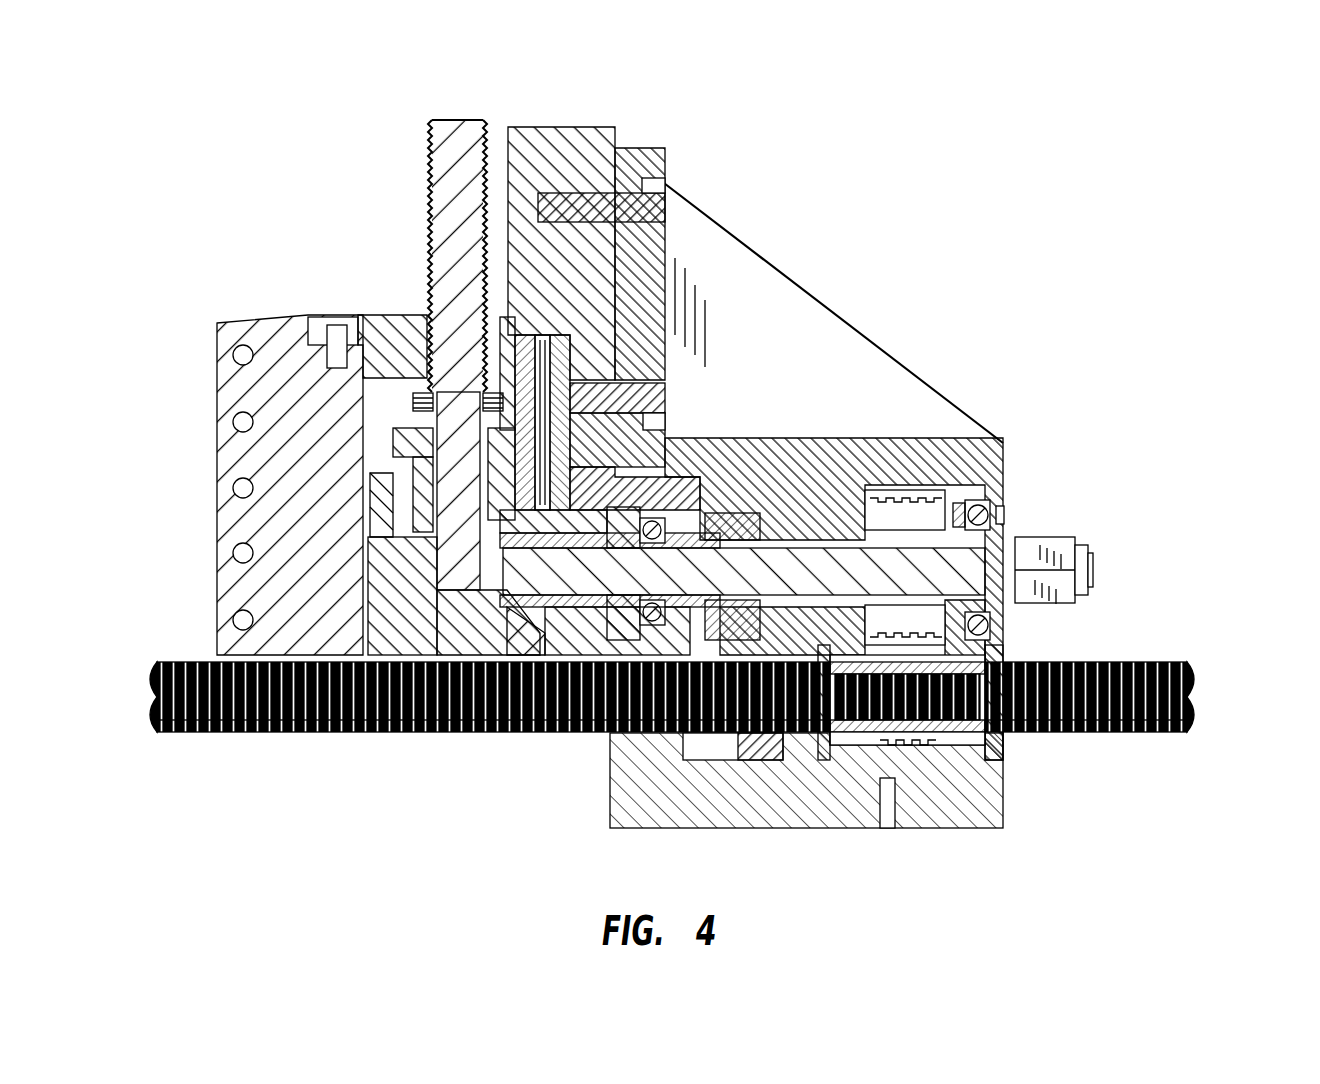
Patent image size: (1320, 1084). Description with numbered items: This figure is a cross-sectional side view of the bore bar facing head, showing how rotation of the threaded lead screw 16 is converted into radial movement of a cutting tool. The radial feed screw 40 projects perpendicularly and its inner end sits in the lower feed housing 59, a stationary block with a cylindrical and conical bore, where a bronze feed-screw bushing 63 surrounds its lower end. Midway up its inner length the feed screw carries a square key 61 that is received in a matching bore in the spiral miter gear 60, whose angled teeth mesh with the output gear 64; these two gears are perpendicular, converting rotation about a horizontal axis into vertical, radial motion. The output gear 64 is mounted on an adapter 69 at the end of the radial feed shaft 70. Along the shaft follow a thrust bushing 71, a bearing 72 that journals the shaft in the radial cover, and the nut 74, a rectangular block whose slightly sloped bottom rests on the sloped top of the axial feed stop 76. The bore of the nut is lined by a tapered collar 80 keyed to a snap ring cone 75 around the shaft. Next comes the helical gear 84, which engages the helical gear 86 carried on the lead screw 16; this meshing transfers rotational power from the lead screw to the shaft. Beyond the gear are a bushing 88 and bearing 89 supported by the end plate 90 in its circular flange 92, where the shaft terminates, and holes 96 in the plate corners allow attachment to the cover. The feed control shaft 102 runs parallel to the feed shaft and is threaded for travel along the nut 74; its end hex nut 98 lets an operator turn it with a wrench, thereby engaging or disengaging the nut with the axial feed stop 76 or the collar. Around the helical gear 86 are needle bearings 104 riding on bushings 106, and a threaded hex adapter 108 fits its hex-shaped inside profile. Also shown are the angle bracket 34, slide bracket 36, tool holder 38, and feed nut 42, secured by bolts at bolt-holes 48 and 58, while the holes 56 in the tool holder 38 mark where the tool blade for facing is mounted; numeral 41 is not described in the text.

The threaded lead screw 16 is at (1140, 660).
The angle bracket 34 is at (710, 262).
The slide bracket 36 is at (555, 130).
The tool holder 38 is at (280, 320).
The radial feed screw 40 is at (440, 135).
The nut 41 is at (407, 397).
The feed nut 42 is at (420, 315).
The bolt-holes 48 is at (663, 180).
The holes 56 is at (234, 418).
The bolt-holes 58 is at (327, 308).
The lower feed housing 59 is at (377, 618).
The spiral miter gear 60 is at (410, 459).
The square key 61 is at (393, 492).
The feed-screw bushing 63 is at (440, 553).
The output gear 64 is at (520, 607).
The adapter 69 is at (470, 600).
The radial feed shaft 70 is at (858, 438).
The thrust bushing 71 is at (600, 625).
The bearing 72 is at (620, 635).
The nut 74 is at (698, 438).
The snap ring cone 75 is at (717, 438).
The axial feed stop 76 is at (742, 735).
The tapered collar 80 is at (762, 438).
The helical gear 84 is at (945, 438).
The helical gear 86 is at (945, 740).
The bushing 88 is at (1000, 640).
The bearing 89 is at (1003, 515).
The end plate 90 is at (992, 700).
The circular flange 92 is at (982, 508).
The holes 96 is at (975, 522).
The end hex nut 98 is at (1062, 540).
The feed control shaft 102 is at (1092, 560).
The needle bearings 104 is at (940, 735).
The bushings 106 is at (820, 742).
The threaded hex adapter 108 is at (915, 742).